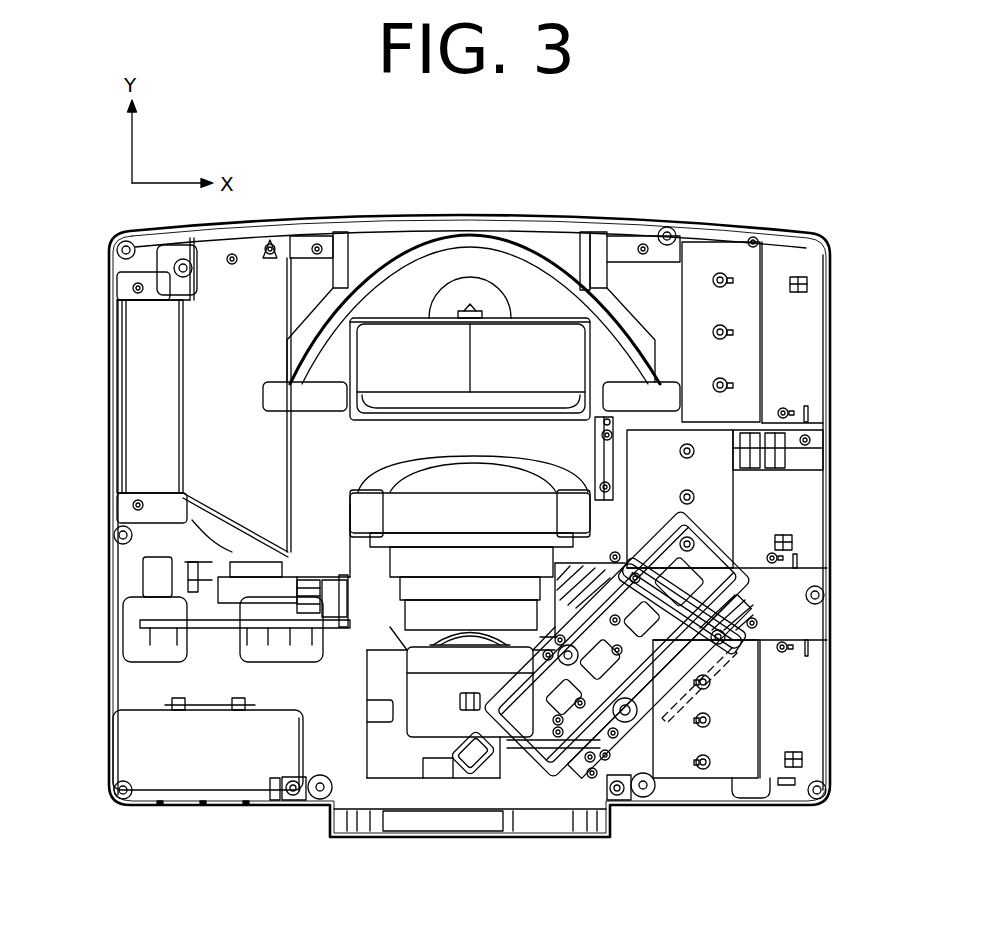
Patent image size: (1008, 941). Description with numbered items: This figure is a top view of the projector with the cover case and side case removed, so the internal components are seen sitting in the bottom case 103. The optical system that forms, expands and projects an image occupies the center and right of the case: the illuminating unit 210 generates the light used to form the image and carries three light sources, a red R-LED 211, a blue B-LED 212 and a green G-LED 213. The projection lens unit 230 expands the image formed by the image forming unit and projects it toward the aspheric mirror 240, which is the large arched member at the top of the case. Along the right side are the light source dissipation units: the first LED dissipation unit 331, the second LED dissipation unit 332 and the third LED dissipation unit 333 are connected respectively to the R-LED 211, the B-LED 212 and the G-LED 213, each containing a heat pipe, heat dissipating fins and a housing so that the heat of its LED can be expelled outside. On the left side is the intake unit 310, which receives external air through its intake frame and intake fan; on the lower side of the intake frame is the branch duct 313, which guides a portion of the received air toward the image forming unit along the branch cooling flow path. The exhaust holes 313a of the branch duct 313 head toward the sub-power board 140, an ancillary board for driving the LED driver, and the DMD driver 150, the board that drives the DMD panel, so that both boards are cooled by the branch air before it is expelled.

The bottom case 103 is at (168, 808).
The sub-power board 140 is at (163, 628).
The DMD driver 150 is at (165, 632).
The illuminating unit 210 is at (594, 778).
The R-LED 211 is at (575, 573).
The B-LED 212 is at (727, 655).
The G-LED 213 is at (745, 603).
The projection lens unit 230 is at (503, 712).
The aspheric mirror 240 is at (522, 250).
The intake unit 310 is at (145, 366).
The branch duct 313 is at (197, 519).
The exhaust holes 313a is at (250, 541).
The first LED dissipation unit 331 is at (721, 496).
The second LED dissipation unit 332 is at (749, 737).
The third LED dissipation unit 333 is at (746, 280).